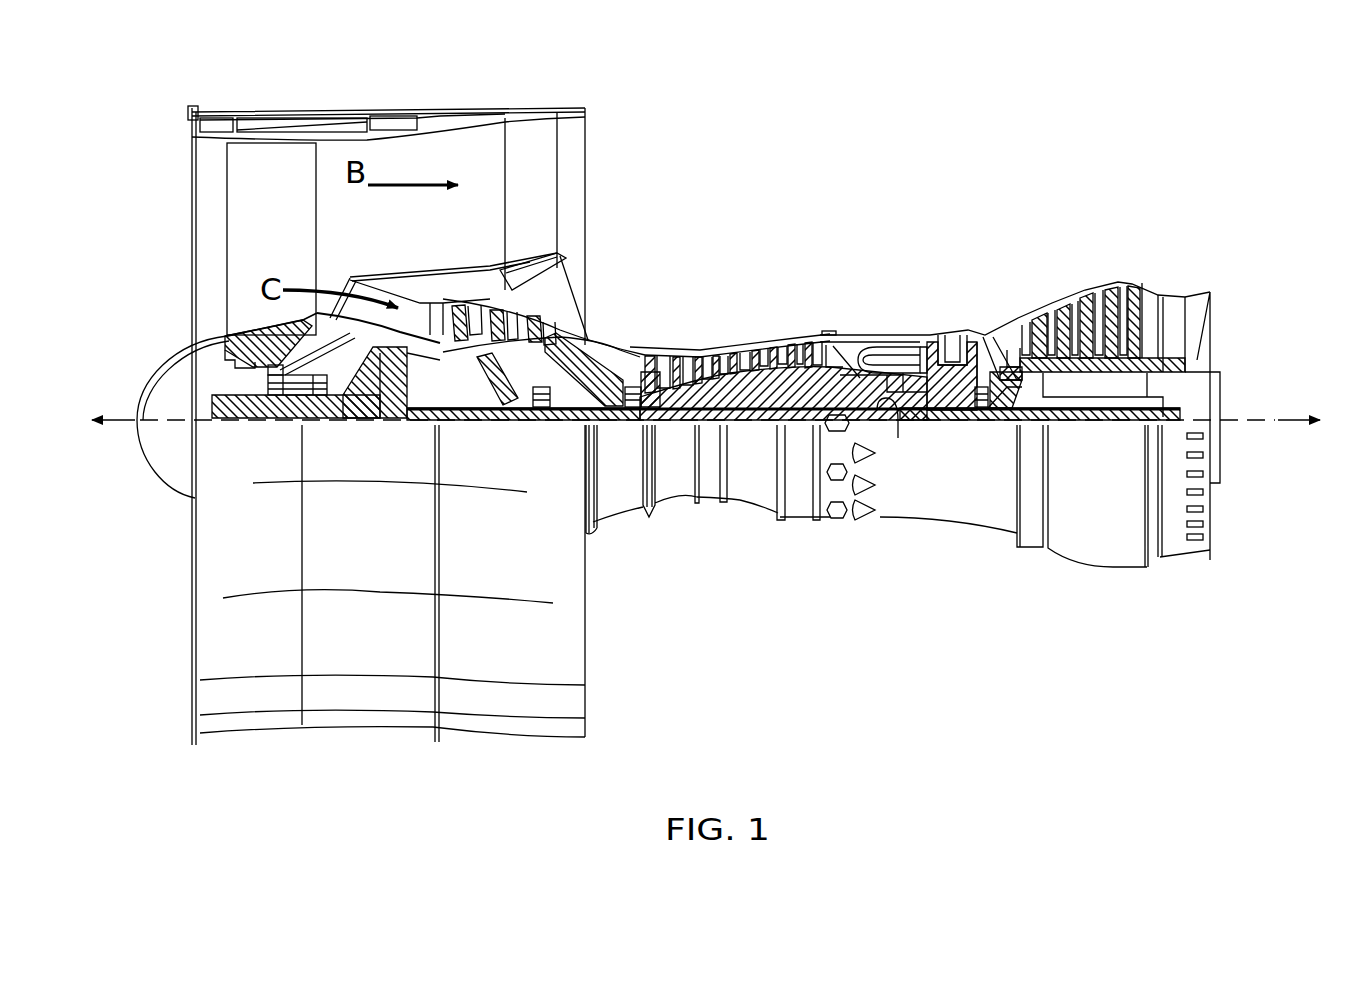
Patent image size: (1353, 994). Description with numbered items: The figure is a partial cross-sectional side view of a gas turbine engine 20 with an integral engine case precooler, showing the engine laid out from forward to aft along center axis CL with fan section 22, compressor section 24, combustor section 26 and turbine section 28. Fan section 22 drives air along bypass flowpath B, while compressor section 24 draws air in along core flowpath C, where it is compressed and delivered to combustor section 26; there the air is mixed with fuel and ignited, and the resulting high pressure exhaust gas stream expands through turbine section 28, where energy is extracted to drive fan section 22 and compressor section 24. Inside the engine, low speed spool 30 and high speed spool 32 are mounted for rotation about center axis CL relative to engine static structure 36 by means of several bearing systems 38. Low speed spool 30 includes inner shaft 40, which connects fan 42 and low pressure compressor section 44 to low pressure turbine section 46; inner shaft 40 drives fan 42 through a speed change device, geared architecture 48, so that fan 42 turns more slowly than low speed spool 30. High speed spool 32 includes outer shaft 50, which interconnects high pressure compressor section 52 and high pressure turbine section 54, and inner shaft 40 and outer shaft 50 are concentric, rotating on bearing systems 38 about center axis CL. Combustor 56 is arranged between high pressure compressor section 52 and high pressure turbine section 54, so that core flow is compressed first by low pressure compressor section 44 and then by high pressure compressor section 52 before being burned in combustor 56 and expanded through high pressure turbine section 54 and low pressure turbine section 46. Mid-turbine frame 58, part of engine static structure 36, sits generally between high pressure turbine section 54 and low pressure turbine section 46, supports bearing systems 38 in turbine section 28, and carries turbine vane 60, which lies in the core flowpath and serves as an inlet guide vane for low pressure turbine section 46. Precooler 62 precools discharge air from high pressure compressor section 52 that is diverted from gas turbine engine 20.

The gas turbine engine 20 is at (1052, 118).
The fan section 22 is at (415, 85).
The compressor section 24 is at (855, 222).
The combustor section 26 is at (925, 222).
The turbine section 28 is at (1165, 222).
The low speed spool 30 is at (750, 432).
The high speed spool 32 is at (782, 385).
The engine static structure 36 is at (800, 524).
The bearing system 38 is at (275, 396).
The inner shaft 40 is at (603, 423).
The fan 42 is at (279, 213).
The low pressure compressor section 44 is at (513, 312).
The low pressure turbine section 46 is at (1085, 299).
The geared architecture 48 is at (394, 397).
The outer shaft 50 is at (894, 432).
The high pressure compressor section 52 is at (718, 350).
The high pressure turbine section 54 is at (952, 337).
The combustor 56 is at (872, 358).
The mid-turbine frame 58 is at (991, 326).
The turbine vane 60 is at (995, 362).
The precooler 62 is at (745, 352).